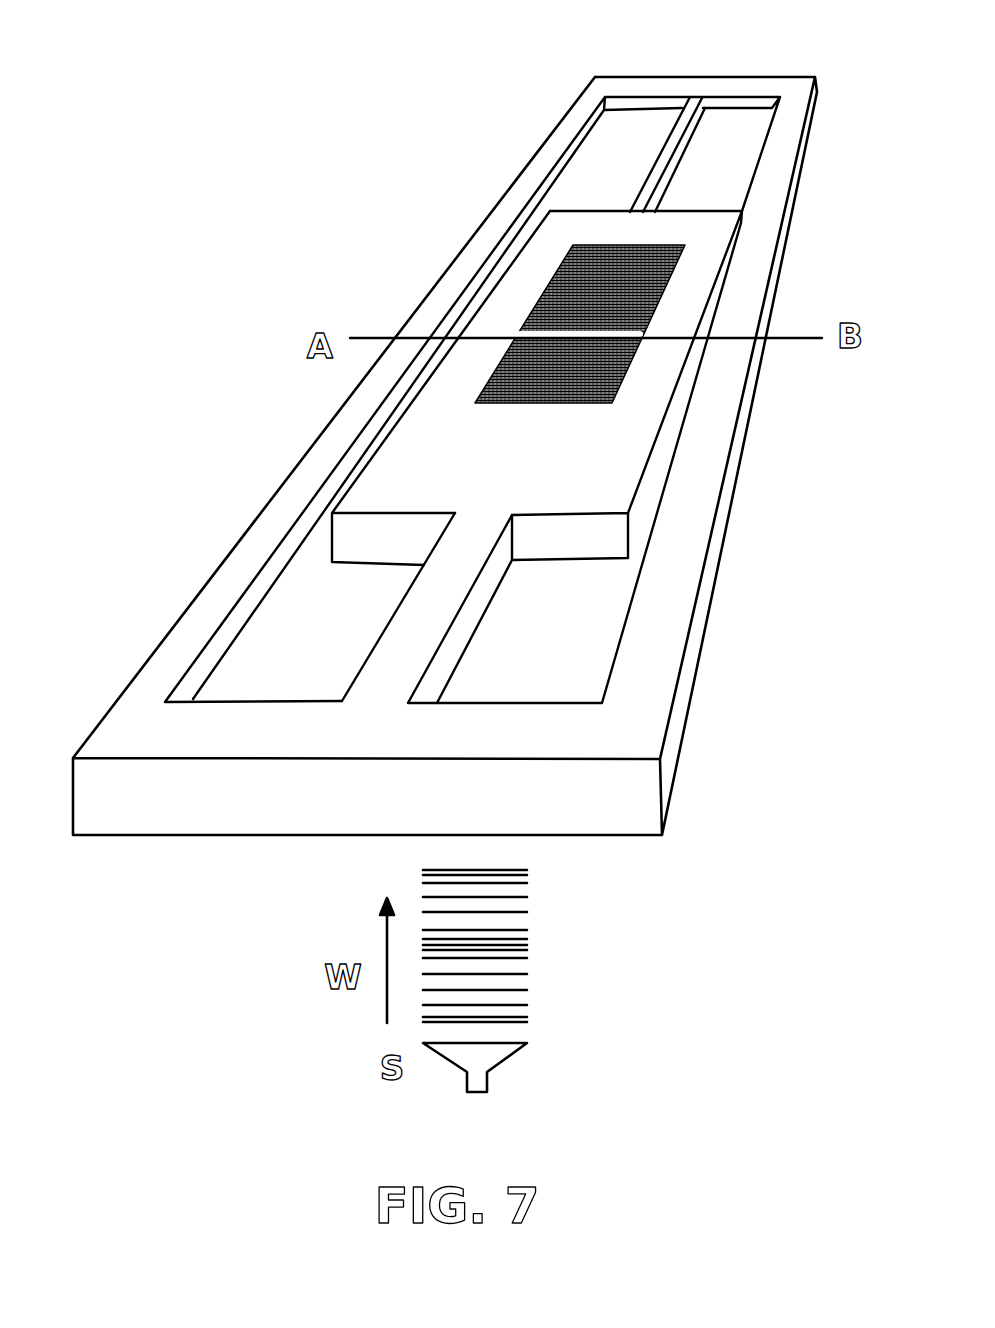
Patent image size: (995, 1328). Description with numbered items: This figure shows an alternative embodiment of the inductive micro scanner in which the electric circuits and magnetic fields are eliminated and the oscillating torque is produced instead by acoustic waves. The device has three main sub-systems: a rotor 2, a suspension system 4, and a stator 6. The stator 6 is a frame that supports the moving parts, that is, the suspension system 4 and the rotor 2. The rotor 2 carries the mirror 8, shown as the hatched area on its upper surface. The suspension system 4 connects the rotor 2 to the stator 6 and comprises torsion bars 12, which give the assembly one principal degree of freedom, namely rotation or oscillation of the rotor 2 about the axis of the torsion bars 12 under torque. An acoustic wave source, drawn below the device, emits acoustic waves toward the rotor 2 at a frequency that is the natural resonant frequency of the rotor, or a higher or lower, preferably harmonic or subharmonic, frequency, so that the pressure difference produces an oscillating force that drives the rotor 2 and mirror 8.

The rotor 2 is at (720, 290).
The suspension system 4 is at (375, 625).
The stator 6 is at (660, 82).
The mirror 8 is at (555, 312).
The torsion bars 12 is at (660, 182).